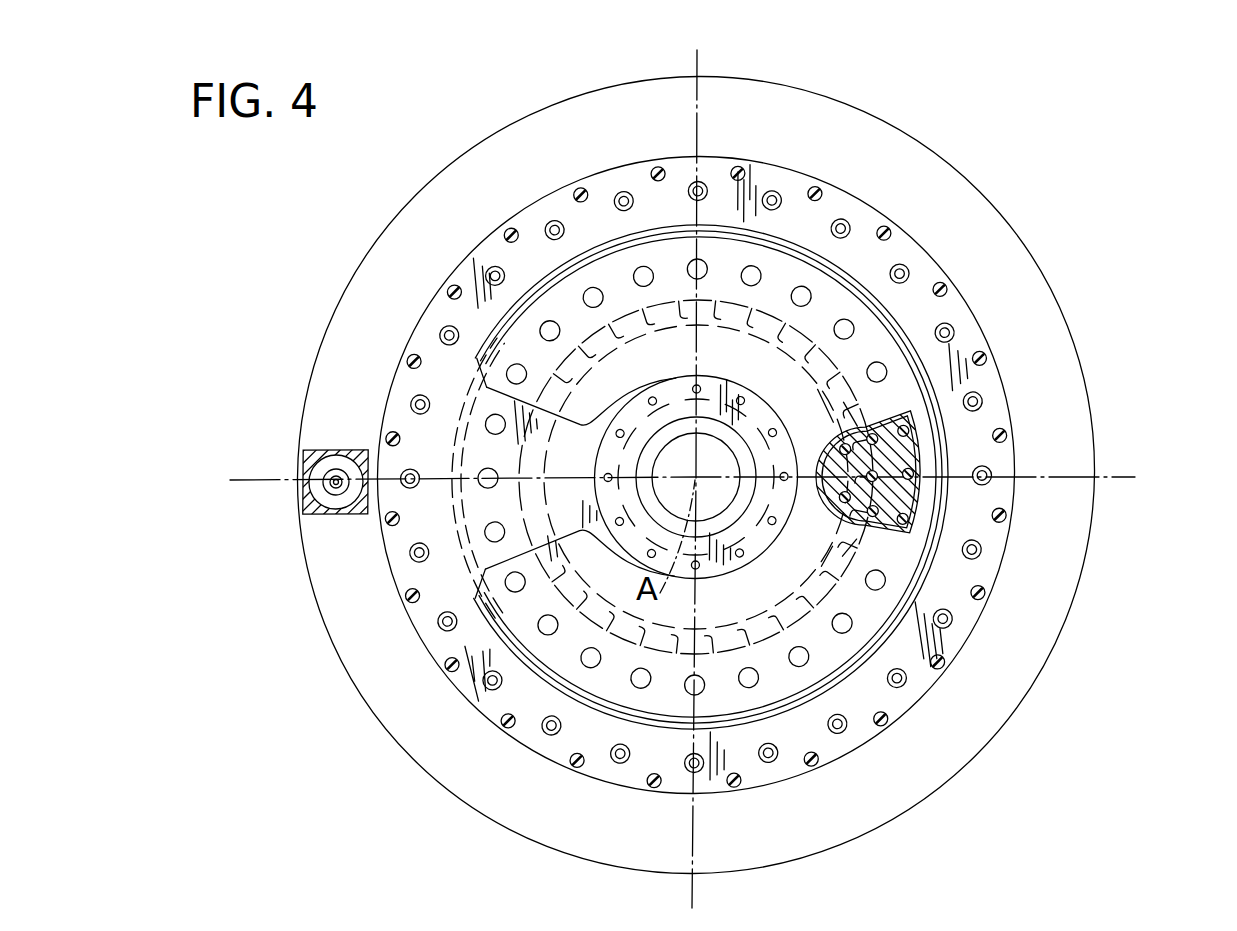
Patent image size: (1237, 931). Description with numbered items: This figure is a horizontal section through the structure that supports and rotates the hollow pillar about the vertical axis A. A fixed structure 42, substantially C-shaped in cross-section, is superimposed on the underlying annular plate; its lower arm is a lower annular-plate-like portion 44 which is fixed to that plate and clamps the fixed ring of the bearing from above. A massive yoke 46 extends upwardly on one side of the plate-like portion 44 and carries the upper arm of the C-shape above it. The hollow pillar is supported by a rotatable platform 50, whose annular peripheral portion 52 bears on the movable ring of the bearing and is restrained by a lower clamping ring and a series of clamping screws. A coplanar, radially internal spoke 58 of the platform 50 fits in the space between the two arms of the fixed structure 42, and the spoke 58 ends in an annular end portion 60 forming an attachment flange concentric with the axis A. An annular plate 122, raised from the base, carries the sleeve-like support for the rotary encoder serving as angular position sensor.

The annular plate 122 is at (1050, 569).
The rotatable platform 50 is at (940, 700).
The annular peripheral portion 52 is at (441, 641).
The fixed structure 42 is at (893, 634).
The lower annular-plate-like portion 44 is at (575, 653).
The spoke 58 is at (580, 448).
The annular end portion 60 is at (730, 400).
The yoke 46 is at (900, 457).